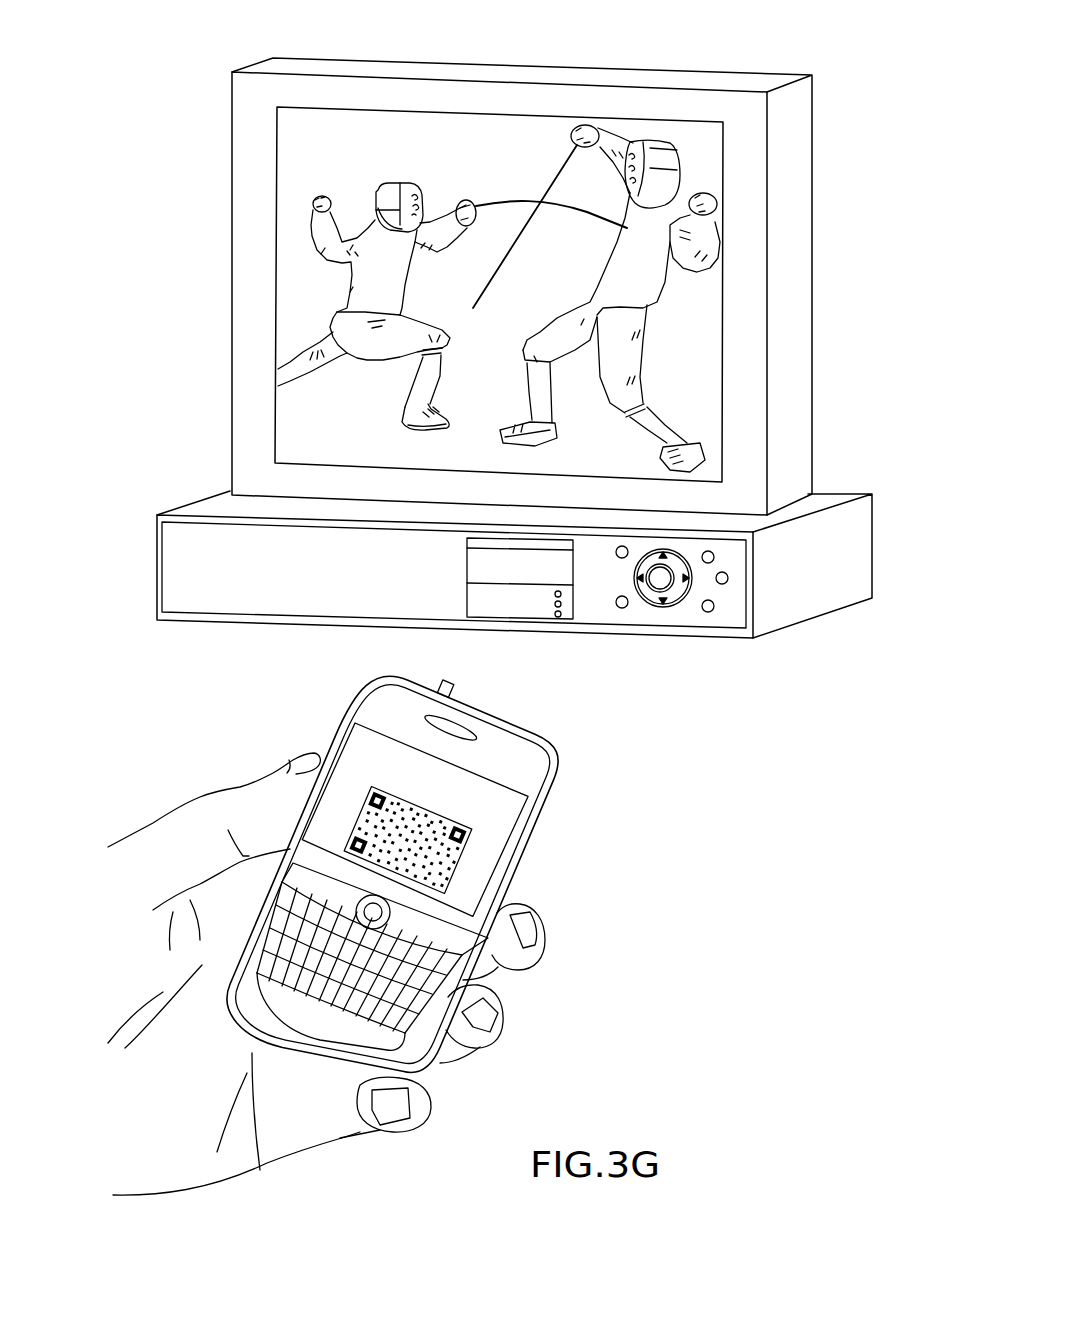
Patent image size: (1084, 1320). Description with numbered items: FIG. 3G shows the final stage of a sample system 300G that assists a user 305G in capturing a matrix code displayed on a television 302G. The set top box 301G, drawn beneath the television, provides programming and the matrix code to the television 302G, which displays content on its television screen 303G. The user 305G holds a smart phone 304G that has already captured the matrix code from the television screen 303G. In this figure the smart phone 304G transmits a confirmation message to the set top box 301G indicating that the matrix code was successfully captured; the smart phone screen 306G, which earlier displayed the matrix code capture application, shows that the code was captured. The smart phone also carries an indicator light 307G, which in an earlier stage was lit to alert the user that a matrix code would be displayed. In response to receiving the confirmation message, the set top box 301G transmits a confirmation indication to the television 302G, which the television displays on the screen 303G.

The system 300G is at (738, 948).
The set top box 301G is at (200, 505).
The television 302G is at (280, 158).
The television screen 303G is at (499, 294).
The smart phone 304G is at (366, 690).
The user 305G is at (195, 806).
The smart phone screen 306G is at (532, 797).
The indicator light 307G is at (455, 681).